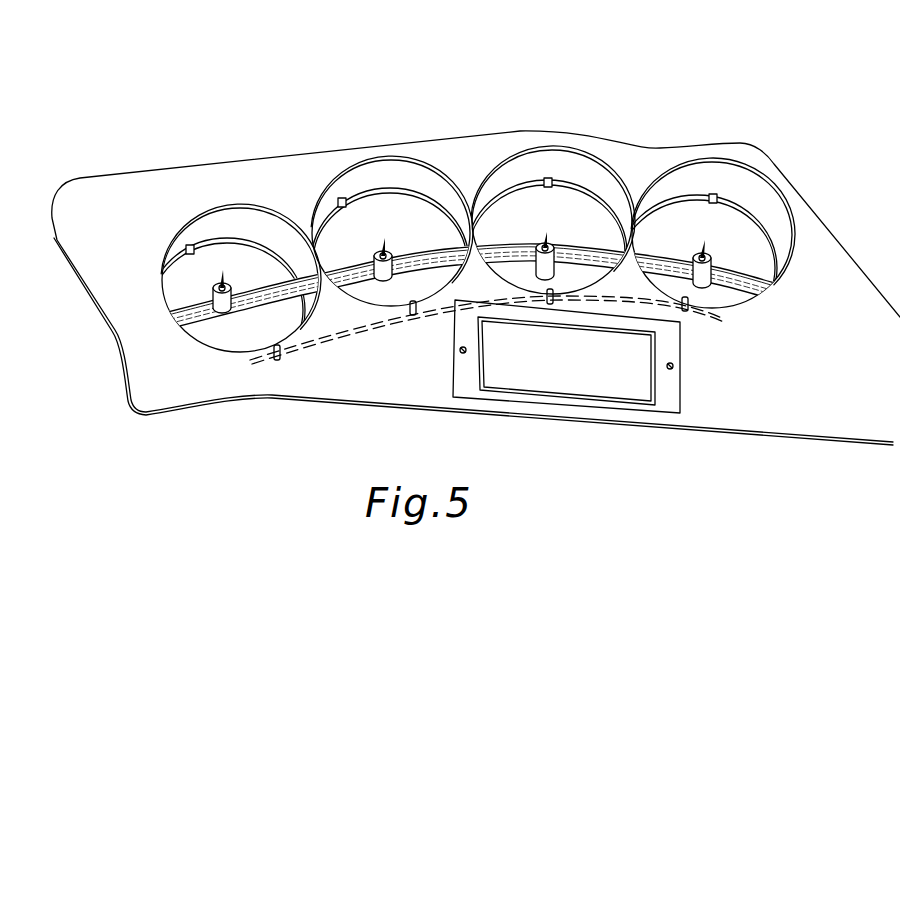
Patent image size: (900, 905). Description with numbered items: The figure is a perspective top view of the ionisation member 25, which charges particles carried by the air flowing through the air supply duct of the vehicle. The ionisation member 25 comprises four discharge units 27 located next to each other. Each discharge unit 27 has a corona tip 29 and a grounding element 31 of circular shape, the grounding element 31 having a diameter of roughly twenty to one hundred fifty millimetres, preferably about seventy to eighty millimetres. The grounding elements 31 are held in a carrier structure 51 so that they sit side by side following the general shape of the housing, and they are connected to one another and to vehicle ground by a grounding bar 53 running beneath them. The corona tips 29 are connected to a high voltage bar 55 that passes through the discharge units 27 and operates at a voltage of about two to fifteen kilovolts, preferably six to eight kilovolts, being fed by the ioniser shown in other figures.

The ionisation member 25 is at (116, 95).
The discharge unit 27 is at (327, 161).
The corona tip 29 is at (707, 248).
The grounding element 31 is at (766, 207).
The carrier structure 51 is at (814, 388).
The grounding bar 53 is at (346, 333).
The high voltage bar 55 is at (733, 290).